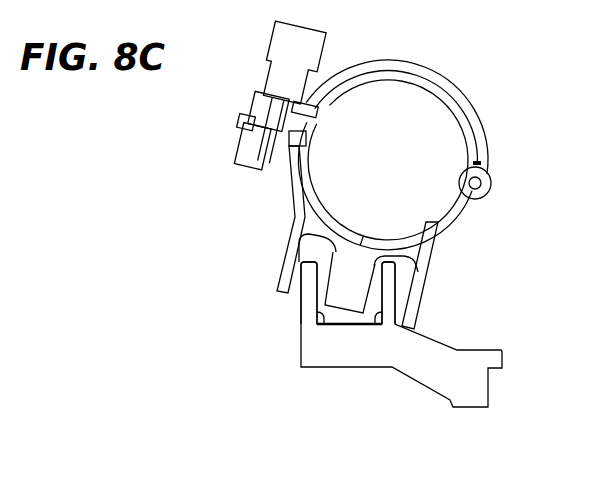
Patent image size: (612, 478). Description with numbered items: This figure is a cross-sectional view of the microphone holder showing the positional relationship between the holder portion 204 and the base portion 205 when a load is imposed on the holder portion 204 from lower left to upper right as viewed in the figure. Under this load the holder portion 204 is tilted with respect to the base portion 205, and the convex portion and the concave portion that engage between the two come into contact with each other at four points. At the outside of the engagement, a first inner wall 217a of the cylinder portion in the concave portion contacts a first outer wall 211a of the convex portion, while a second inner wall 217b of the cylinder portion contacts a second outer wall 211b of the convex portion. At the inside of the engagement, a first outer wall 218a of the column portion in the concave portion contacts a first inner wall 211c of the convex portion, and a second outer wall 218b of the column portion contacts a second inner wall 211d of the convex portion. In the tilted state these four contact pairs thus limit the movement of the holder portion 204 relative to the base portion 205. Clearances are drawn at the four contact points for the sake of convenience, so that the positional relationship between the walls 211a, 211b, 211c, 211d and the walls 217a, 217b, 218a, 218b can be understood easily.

The holder portion 204 is at (408, 59).
The base portion 205 is at (446, 405).
The first outer wall 211a is at (301, 316).
The second outer wall 211b is at (396, 303).
The first inner wall 211c is at (323, 313).
The second inner wall 211d is at (377, 313).
The first inner wall 217a is at (283, 268).
The second inner wall 217b is at (427, 289).
The first outer wall 218a is at (306, 246).
The second outer wall 218b is at (398, 261).